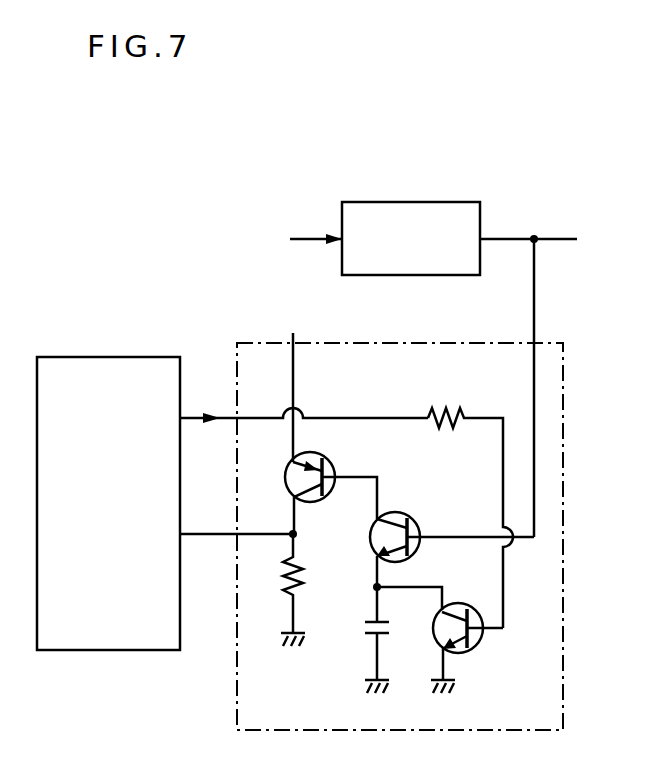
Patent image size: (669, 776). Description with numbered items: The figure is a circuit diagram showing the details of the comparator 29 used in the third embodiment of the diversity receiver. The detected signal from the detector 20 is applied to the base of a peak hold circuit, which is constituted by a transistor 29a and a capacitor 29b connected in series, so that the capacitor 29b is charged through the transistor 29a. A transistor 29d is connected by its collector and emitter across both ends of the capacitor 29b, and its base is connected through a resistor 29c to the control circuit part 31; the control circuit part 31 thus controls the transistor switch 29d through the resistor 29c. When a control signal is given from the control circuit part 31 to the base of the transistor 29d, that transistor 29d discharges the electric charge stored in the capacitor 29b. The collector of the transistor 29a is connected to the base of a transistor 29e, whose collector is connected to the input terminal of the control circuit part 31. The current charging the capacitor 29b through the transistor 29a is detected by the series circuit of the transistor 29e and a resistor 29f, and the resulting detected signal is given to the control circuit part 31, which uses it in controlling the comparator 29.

The detector 20 is at (426, 202).
The control circuit part 31 is at (113, 357).
The comparator 29 is at (564, 728).
The transistor 29a is at (417, 522).
The capacitor 29b is at (385, 637).
The resistor 29c is at (440, 430).
The transistor 29d is at (477, 646).
The transistor 29e is at (329, 499).
The resistor 29f is at (301, 600).